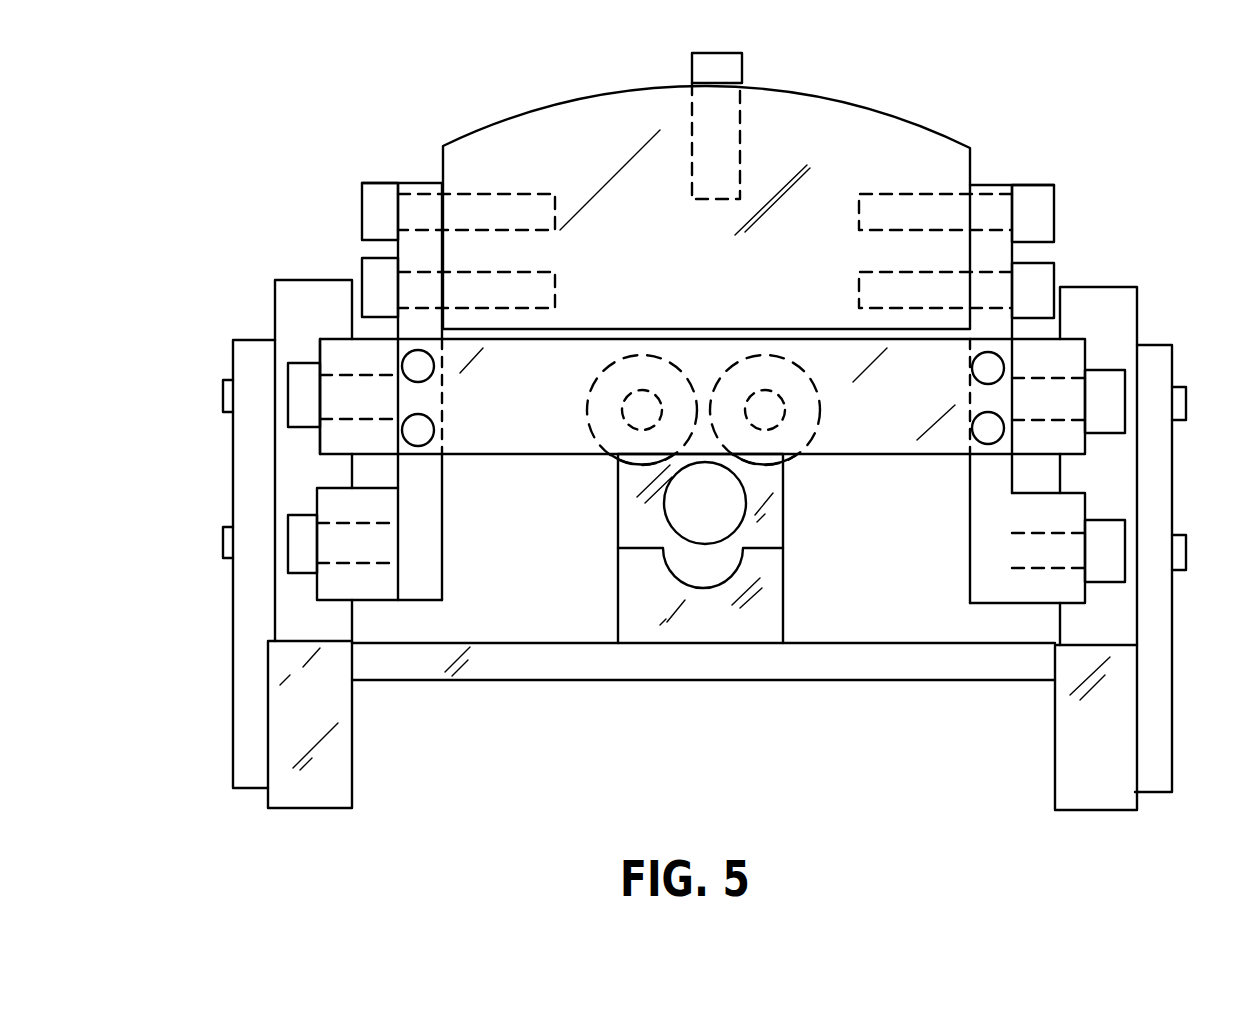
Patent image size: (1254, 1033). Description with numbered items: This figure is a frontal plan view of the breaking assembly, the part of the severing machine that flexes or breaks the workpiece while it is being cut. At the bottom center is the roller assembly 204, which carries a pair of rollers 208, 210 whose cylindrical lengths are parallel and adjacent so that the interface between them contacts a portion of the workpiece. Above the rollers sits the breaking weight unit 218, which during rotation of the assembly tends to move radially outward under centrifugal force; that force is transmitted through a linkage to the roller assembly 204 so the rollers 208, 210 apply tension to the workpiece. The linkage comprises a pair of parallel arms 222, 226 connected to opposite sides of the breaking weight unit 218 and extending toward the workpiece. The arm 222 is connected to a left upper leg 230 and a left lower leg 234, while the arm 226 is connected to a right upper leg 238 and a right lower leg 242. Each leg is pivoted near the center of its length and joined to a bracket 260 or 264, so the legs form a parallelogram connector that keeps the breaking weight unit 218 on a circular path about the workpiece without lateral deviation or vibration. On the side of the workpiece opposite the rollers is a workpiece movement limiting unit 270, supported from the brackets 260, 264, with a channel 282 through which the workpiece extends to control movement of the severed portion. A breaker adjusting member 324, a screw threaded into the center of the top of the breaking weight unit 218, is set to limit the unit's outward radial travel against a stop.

The roller assembly 204 is at (540, 456).
The roller 208 is at (592, 413).
The roller 210 is at (815, 390).
The breaking weight unit 218 is at (910, 131).
The arm 222 is at (410, 252).
The arm 226 is at (1000, 247).
The left upper leg 230 is at (330, 353).
The left lower leg 234 is at (320, 504).
The right upper leg 238 is at (1075, 355).
The right lower leg 242 is at (1080, 503).
The bracket 260 is at (245, 627).
The bracket 264 is at (1157, 514).
The workpiece movement limiting unit 270 is at (615, 643).
The channel 282 is at (740, 568).
The breaker adjusting member 324 is at (742, 66).